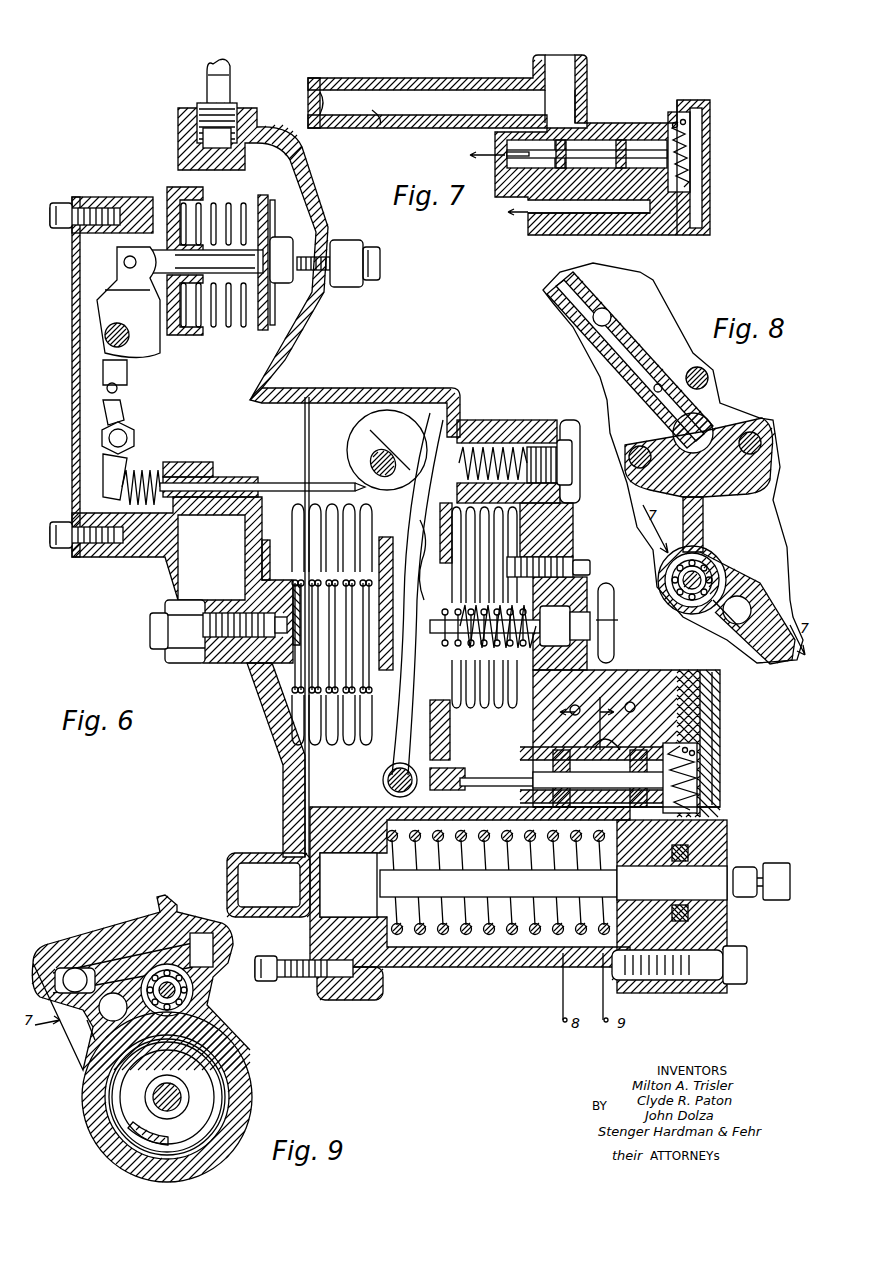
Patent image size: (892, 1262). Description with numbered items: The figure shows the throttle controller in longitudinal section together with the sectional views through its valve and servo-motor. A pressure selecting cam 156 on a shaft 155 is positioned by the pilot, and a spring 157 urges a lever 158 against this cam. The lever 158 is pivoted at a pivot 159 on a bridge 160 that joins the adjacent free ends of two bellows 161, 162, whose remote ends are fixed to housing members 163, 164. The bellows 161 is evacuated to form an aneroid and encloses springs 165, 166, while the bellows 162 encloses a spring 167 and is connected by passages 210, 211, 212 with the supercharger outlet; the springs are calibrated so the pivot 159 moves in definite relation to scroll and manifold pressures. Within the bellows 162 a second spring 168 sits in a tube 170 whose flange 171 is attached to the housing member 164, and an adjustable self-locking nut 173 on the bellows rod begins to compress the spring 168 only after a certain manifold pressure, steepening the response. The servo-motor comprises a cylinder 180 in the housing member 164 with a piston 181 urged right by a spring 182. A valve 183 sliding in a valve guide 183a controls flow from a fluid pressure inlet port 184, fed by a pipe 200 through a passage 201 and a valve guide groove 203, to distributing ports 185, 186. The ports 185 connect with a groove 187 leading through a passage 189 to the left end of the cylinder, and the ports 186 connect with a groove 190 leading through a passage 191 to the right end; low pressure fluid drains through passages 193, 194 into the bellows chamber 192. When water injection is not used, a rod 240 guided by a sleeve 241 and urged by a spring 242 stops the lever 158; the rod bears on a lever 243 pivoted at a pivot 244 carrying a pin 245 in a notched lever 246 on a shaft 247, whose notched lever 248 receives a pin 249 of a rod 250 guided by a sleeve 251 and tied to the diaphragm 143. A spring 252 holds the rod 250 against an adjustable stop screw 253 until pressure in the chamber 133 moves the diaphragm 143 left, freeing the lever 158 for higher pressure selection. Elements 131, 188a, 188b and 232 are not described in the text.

In FIG. 6, the fuel inlet pipe 131 is at (207, 81).
In FIG. 6, the chamber 133 is at (310, 200).
In FIG. 6, the diaphragm 143 is at (292, 175).
In FIG. 6, the shaft 155 is at (371, 464).
In FIG. 6, the pressure selecting cam 156 is at (368, 437).
In FIG. 6, the spring 157 is at (485, 432).
In FIG. 6, the lever 158 is at (450, 410).
In FIG. 6, the pivot 159 is at (380, 705).
In FIG. 6, the bridge 160 is at (371, 540).
In FIG. 6, the bellows 161 is at (365, 518).
In FIG. 6, the bellows 162 is at (440, 518).
In FIG. 6, the housing member 163 is at (108, 560).
In FIG. 6, the housing member 164 is at (545, 540).
In FIG. 6, the spring 165 is at (262, 600).
In FIG. 6, the spring 166 is at (262, 562).
In FIG. 6, the spring 167 is at (505, 580).
In FIG. 6, the second spring 168 is at (585, 590).
In FIG. 6, the tube 170 is at (448, 710).
In FIG. 6, the flange 171 is at (532, 735).
In FIG. 6, the adjustable self-locking nut 173 is at (592, 622).
In FIG. 9, the cylinder 180 is at (84, 1098).
In FIG. 6, the cylinder 180 is at (440, 965).
In FIG. 9, the piston 181 is at (190, 1080).
In FIG. 6, the piston 181 is at (600, 960).
In FIG. 9, the spring 182 is at (110, 1148).
In FIG. 6, the spring 182 is at (530, 960).
In FIG. 7, the servo-motor control valve 183 is at (686, 156).
In FIG. 8, the servo-motor control valve 183 is at (700, 565).
In FIG. 9, the servo-motor control valve 183 is at (196, 1000).
In FIG. 6, the servo-motor control valve 183 is at (700, 775).
In FIG. 7, the valve guide 183a is at (690, 140).
In FIG. 8, the valve guide 183a is at (718, 572).
In FIG. 9, the valve guide 183a is at (180, 990).
In FIG. 6, the valve guide 183a is at (700, 745).
In FIG. 7, the fluid pressure inlet port 184 is at (640, 104).
In FIG. 9, the fluid pressure inlet port 184 is at (140, 985).
In FIG. 6, the fluid pressure inlet port 184 is at (625, 750).
In FIG. 7, the distributing port 185 is at (592, 105).
In FIG. 6, the distributing port 185 is at (512, 778).
In FIG. 7, the distributing port 186 is at (683, 112).
In FIG. 6, the distributing port 186 is at (702, 740).
In FIG. 7, the groove 187 is at (590, 100).
In FIG. 6, the groove 187 is at (580, 760).
In FIG. 7, the port 188a is at (563, 82).
In FIG. 8, the port 188a is at (716, 597).
In FIG. 7, the passage 188b is at (447, 95).
In FIG. 8, the passage 188b is at (745, 612).
In FIG. 7, the passage 189 is at (380, 126).
In FIG. 6, the passage 189 is at (370, 843).
In FIG. 7, the groove 190 is at (680, 110).
In FIG. 6, the groove 190 is at (700, 705).
In FIG. 6, the passage 191 is at (700, 830).
In FIG. 7, the bellows chamber 192 is at (504, 182).
In FIG. 6, the bellows chamber 192 is at (317, 780).
In FIG. 7, the passage 193 is at (695, 121).
In FIG. 7, the passage 194 is at (567, 216).
In FIG. 9, the passage 194 is at (112, 1010).
In FIG. 9, the pipe 200 is at (118, 950).
In FIG. 6, the pipe 200 is at (590, 700).
In FIG. 9, the passage 201 is at (72, 966).
In FIG. 7, the valve guide groove 203 is at (635, 99).
In FIG. 9, the valve guide groove 203 is at (167, 975).
In FIG. 6, the valve guide groove 203 is at (640, 710).
In FIG. 8, the passage 210 is at (700, 431).
In FIG. 8, the passage 211 is at (628, 347).
In FIG. 8, the passage 212 is at (611, 316).
In FIG. 9, the shaft 232 is at (182, 1097).
In FIG. 6, the shaft 232 is at (490, 895).
In FIG. 6, the rod 240 is at (276, 482).
In FIG. 6, the sleeve 241 is at (225, 475).
In FIG. 6, the spring 242 is at (146, 468).
In FIG. 6, the lever 243 is at (103, 470).
In FIG. 6, the pivot 244 is at (108, 438).
In FIG. 6, the pin 245 is at (106, 390).
In FIG. 6, the notched lever 246 is at (103, 372).
In FIG. 6, the shaft 247 is at (105, 338).
In FIG. 6, the notched lever 248 is at (100, 290).
In FIG. 6, the pin 249 is at (124, 262).
In FIG. 6, the rod 250 is at (170, 220).
In FIG. 6, the sleeve 251 is at (190, 290).
In FIG. 6, the spring 252 is at (180, 200).
In FIG. 6, the adjustable stop screw 253 is at (330, 245).